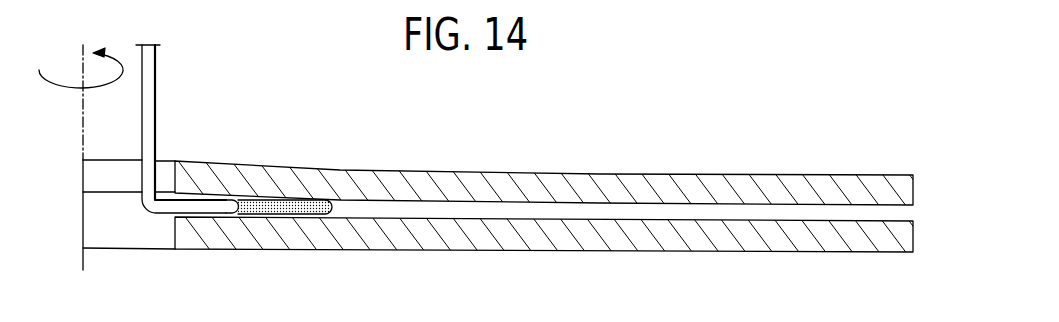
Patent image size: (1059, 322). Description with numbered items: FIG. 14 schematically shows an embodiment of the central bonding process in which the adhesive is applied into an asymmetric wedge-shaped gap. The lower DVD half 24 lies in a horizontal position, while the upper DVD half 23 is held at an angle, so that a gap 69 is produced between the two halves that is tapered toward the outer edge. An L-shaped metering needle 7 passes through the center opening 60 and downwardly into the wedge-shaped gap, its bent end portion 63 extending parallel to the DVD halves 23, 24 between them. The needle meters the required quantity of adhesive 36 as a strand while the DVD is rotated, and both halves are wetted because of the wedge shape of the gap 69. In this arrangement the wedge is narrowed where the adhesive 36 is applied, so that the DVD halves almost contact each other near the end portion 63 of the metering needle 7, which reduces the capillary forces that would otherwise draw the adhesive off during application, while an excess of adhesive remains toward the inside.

The metering needle 7 is at (148, 79).
The center opening 60 is at (165, 168).
The end portion 63 is at (221, 208).
The upper DVD half 23 is at (589, 193).
The lower DVD half 24 is at (585, 235).
The adhesive / filler 36 is at (282, 208).
The gap 69 is at (115, 203).